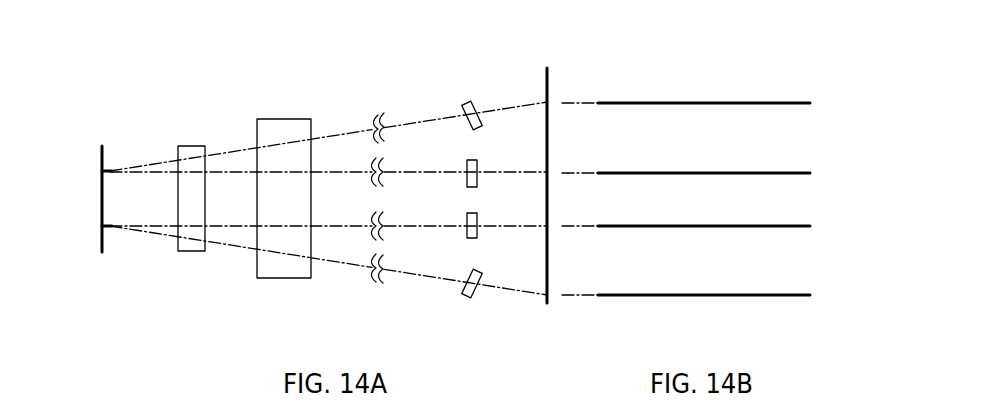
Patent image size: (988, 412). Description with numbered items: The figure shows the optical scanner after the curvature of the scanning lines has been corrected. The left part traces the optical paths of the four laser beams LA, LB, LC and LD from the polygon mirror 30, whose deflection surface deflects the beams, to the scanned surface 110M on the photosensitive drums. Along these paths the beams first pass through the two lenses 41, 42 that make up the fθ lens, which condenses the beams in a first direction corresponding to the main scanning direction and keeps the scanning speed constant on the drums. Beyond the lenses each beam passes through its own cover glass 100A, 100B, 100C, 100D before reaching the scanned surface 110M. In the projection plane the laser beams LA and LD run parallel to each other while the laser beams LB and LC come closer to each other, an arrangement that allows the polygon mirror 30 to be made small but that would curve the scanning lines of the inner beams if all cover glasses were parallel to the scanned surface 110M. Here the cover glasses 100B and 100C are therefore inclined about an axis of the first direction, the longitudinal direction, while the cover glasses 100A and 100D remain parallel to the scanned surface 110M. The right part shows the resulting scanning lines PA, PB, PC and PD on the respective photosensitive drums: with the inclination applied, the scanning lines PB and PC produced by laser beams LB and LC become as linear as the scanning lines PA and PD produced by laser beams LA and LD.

In FIG. 14A, the polygon mirror 30 is at (102, 198).
In FIG. 14A, the lens 41 is at (192, 251).
In FIG. 14A, the lens 42 is at (282, 278).
In FIG. 14A, the laser beam LA is at (338, 166).
In FIG. 14A, the laser beam LB is at (155, 163).
In FIG. 14A, the laser beam LC is at (154, 233).
In FIG. 14A, the laser beam LD is at (335, 230).
In FIG. 14A, the cover glass 100A is at (466, 165).
In FIG. 14A, the cover glass 100B is at (465, 108).
In FIG. 14A, the cover glass 100C is at (464, 288).
In FIG. 14A, the cover glass 100D is at (466, 232).
In FIG. 14A, the scanned surface 110M is at (547, 80).
In FIG. 14B, the scanning line PA is at (742, 172).
In FIG. 14B, the scanning line PB is at (665, 102).
In FIG. 14B, the scanning line PC is at (742, 297).
In FIG. 14B, the scanning line PD is at (665, 228).